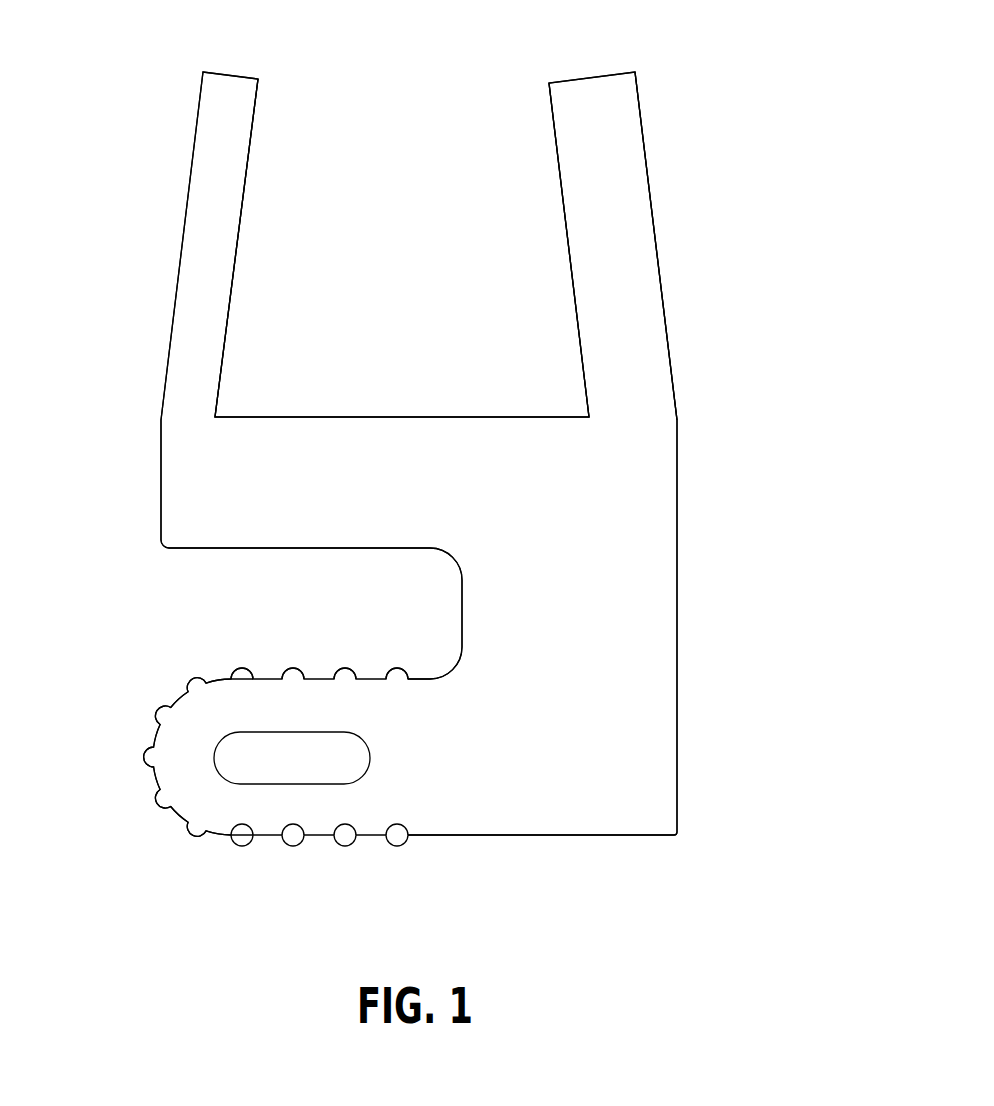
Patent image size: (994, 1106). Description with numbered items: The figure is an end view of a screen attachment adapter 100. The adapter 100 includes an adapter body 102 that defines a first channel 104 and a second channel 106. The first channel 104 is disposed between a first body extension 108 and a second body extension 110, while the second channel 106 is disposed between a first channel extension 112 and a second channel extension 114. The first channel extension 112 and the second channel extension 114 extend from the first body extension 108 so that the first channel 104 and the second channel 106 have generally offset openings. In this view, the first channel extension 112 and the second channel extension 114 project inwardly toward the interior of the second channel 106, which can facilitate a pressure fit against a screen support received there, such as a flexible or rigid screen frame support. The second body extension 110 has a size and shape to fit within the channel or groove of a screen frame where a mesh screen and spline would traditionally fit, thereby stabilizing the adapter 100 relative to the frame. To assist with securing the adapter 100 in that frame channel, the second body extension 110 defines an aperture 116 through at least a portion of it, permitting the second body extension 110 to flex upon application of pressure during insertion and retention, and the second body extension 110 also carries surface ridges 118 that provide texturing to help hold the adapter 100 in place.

The adapter 100 is at (722, 59).
The adapter body 102 is at (662, 551).
The first channel 104 is at (160, 613).
The second channel 106 is at (414, 86).
The first body extension 108 is at (177, 487).
The second body extension 110 is at (180, 748).
The first channel extension 112 is at (230, 86).
The second channel extension 114 is at (594, 88).
The aperture 116 is at (247, 768).
The surface ridges 118 is at (292, 668).